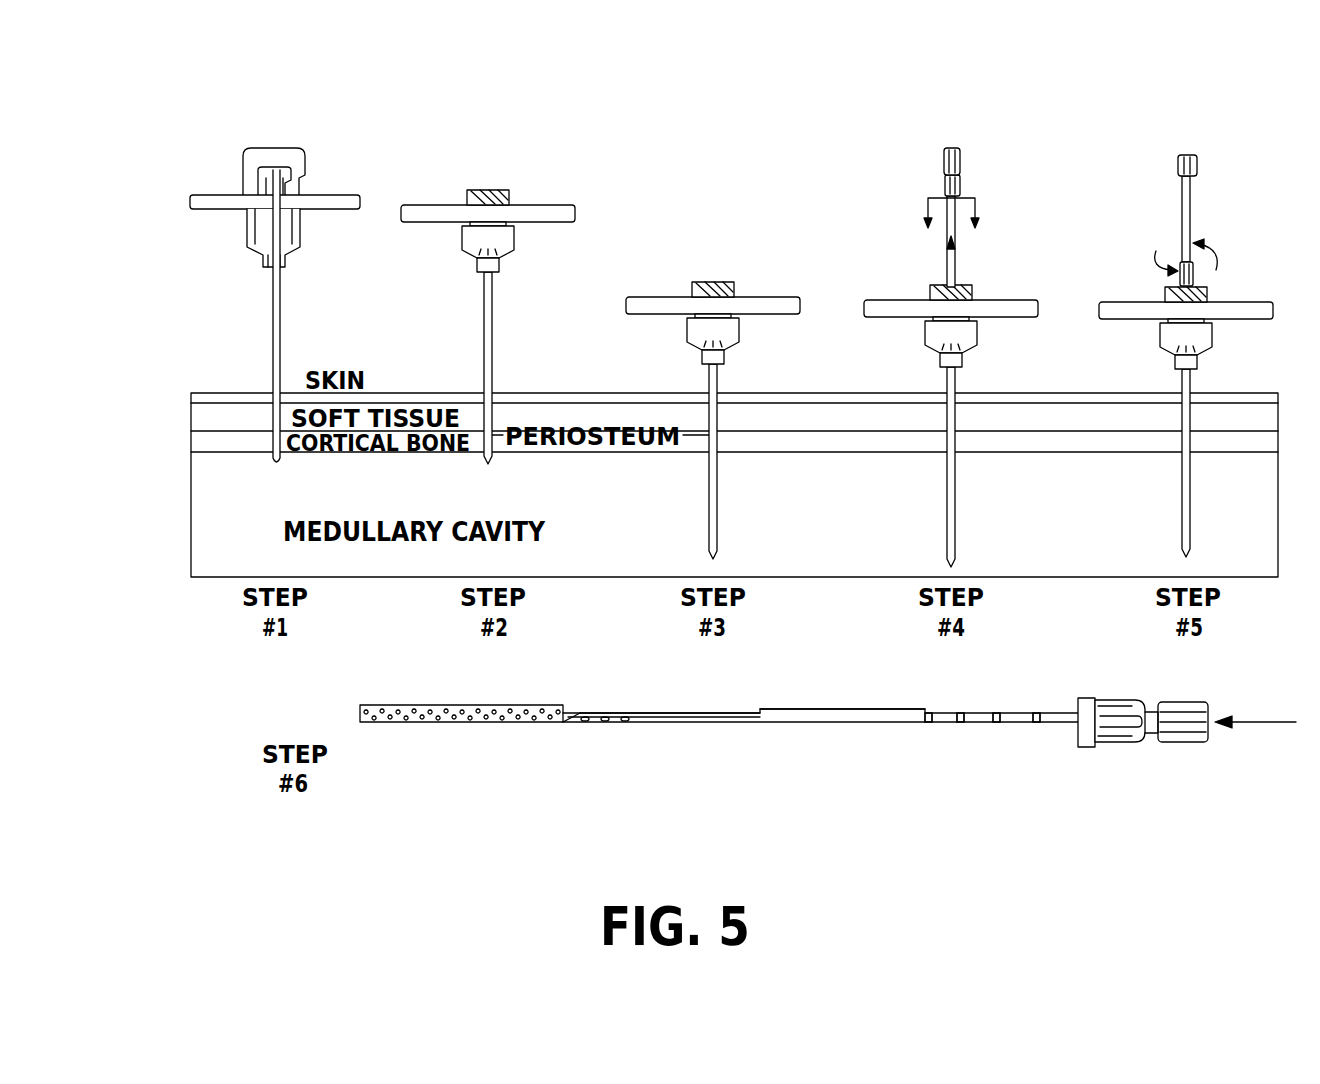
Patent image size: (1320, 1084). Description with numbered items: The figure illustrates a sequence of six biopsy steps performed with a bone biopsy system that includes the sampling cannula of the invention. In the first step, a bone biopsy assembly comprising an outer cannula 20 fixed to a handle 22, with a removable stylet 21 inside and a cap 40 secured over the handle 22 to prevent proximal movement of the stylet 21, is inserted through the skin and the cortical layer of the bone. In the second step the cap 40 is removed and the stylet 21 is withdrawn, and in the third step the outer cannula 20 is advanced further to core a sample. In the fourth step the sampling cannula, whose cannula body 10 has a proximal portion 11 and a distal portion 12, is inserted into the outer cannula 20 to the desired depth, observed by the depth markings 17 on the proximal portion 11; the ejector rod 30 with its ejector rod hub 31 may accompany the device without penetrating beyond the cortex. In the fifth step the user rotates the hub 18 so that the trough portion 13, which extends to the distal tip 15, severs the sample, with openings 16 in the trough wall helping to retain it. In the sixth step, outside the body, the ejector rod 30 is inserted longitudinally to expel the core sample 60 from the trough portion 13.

The cannula body 10 is at (945, 190).
The proximal portion 11 is at (895, 724).
The distal portion 12 is at (775, 724).
The trough portion 13 is at (710, 724).
The distal tip 15 is at (560, 722).
The openings 16 is at (585, 724).
The markings 17 is at (928, 725).
The hub 18 is at (1135, 745).
The outer cannula 20 is at (273, 323).
The stylet 21 is at (258, 193).
The handle 22 is at (253, 246).
The ejector rod 30 is at (955, 148).
The ejector rod hub 31 is at (961, 167).
The cap 40 is at (272, 148).
The core sample 60 is at (392, 722).